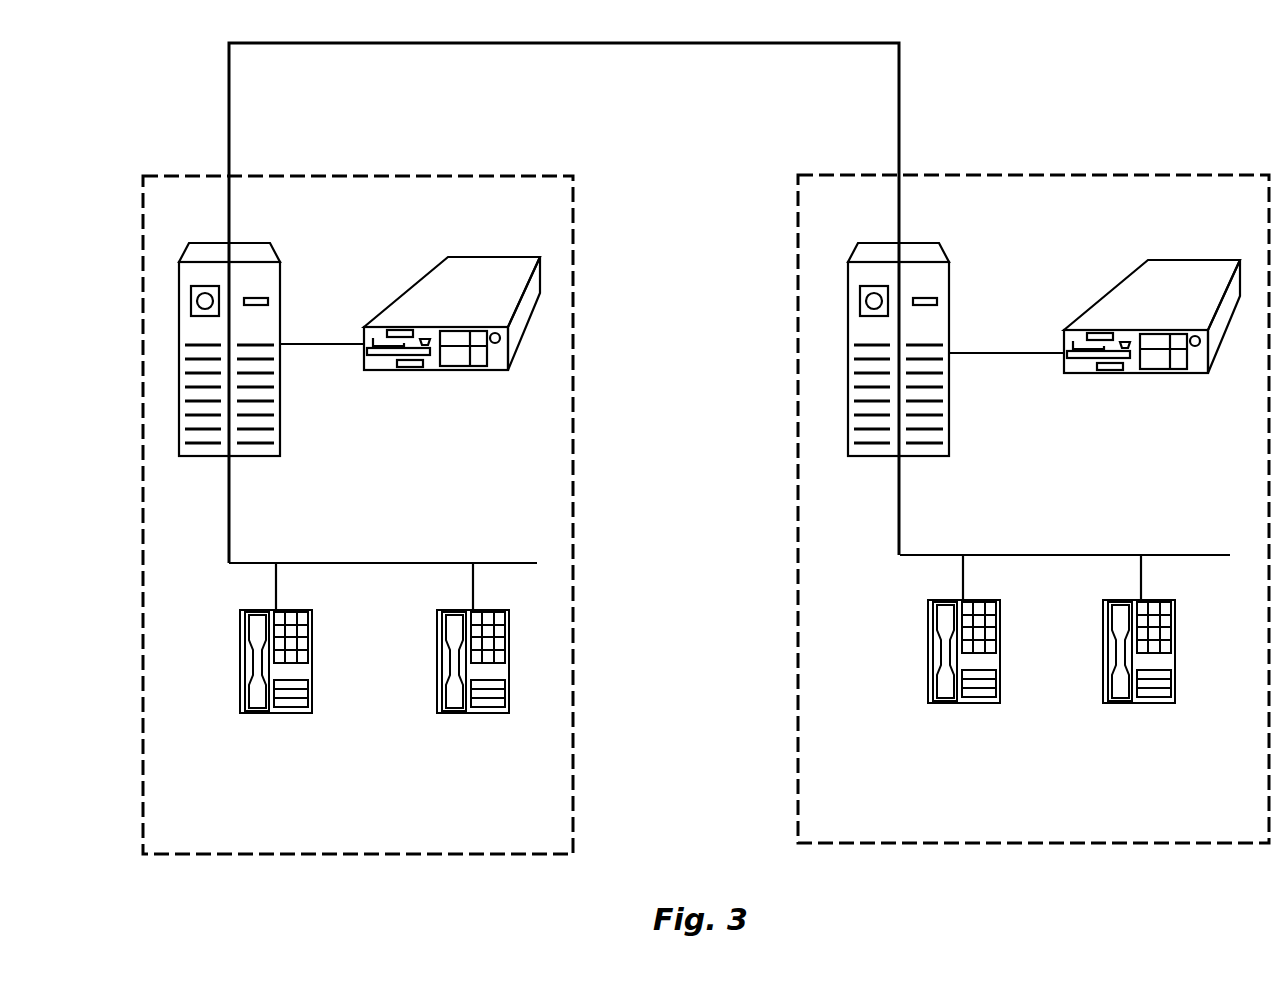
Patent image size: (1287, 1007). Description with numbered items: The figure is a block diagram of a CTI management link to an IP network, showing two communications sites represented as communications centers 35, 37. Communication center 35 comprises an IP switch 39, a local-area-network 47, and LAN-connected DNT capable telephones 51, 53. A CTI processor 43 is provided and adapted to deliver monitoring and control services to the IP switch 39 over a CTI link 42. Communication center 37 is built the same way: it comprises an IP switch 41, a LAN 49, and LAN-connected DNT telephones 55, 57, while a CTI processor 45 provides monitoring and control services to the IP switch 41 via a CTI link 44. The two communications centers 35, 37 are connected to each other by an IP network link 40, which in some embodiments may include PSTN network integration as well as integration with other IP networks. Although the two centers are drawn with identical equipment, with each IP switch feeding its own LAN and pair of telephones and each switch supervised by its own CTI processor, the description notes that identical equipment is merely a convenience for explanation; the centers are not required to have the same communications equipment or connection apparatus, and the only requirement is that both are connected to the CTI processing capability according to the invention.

The communication center 35 is at (373, 854).
The communication center 37 is at (1133, 843).
The IP switch 39 is at (280, 293).
The IP network link 40 is at (633, 52).
The IP switch 41 is at (950, 303).
The CTI link 42 is at (295, 344).
The CTI processor 43 is at (407, 367).
The CTI link 44 is at (982, 353).
The CTI processor 45 is at (1117, 373).
The local-area-network 47 is at (425, 563).
The LAN 49 is at (1088, 555).
The DNT capable telephone 51 is at (280, 713).
The DNT capable telephone 53 is at (487, 713).
The DNT telephone 55 is at (975, 703).
The DNT telephone 57 is at (1148, 703).